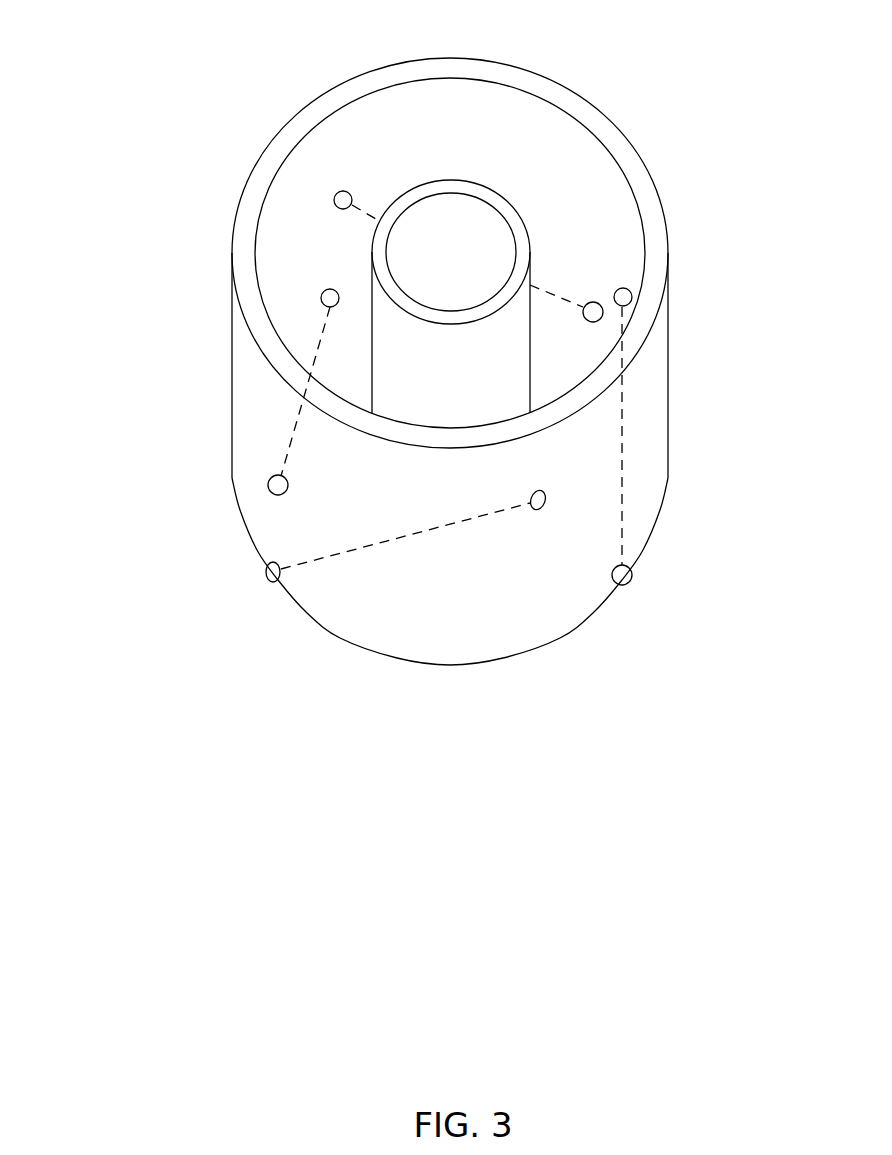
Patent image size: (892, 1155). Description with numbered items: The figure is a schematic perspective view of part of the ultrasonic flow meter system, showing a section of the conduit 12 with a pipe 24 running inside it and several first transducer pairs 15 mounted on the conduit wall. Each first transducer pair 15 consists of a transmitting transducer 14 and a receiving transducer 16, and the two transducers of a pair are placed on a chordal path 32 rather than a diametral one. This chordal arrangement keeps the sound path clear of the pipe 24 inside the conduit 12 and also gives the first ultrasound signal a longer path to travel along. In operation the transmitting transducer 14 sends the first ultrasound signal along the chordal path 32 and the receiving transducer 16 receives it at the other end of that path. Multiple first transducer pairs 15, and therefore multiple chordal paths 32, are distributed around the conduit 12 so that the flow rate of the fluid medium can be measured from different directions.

The conduit 12 is at (238, 210).
The transmitting transducer 14 is at (321, 297).
The first transducer pair 15 is at (597, 280).
The receiving transducer 16 is at (343, 191).
The pipe 24 is at (487, 190).
The chordal path 32 is at (368, 213).